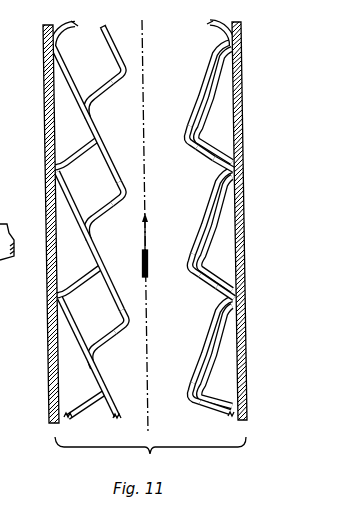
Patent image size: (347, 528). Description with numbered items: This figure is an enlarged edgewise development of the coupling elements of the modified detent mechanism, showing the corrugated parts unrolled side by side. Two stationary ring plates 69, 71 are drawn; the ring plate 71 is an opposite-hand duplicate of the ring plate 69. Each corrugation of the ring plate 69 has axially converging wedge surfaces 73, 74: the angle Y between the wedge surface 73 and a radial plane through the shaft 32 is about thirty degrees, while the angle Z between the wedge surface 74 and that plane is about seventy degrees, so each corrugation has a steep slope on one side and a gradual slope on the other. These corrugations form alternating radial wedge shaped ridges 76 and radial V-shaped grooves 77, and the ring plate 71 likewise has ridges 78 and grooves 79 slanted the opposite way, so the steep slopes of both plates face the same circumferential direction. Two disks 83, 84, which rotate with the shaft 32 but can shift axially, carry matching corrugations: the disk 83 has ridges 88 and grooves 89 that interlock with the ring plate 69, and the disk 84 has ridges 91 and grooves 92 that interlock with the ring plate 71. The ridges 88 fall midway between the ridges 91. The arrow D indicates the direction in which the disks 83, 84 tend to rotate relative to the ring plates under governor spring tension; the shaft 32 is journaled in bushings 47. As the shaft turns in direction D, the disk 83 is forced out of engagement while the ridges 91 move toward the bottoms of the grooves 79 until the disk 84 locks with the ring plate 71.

The shaft 32 is at (13, 258).
The bushings 47 is at (6, 228).
The ring plate 69 is at (224, 427).
The ring plate 71 is at (77, 426).
The wedge surface 73 is at (208, 88).
The wedge surface 74 is at (204, 150).
The radial wedge shaped ridges 76 is at (203, 141).
The radial V-shaped grooves 77 is at (239, 34).
The radial wedge shaped ridges 78 is at (96, 137).
The radial V-shaped grooves 79 is at (50, 43).
The disk 83 is at (205, 413).
The disk 84 is at (111, 427).
The radial wedge shaped ridges 88 is at (222, 42).
The radial V-shaped grooves 89 is at (193, 134).
The radial wedge shaped ridges 91 is at (91, 104).
The radial V-shaped grooves 92 is at (124, 71).
The arrow D is at (151, 245).
The angle Y is at (58, 67).
The angle Z is at (72, 157).